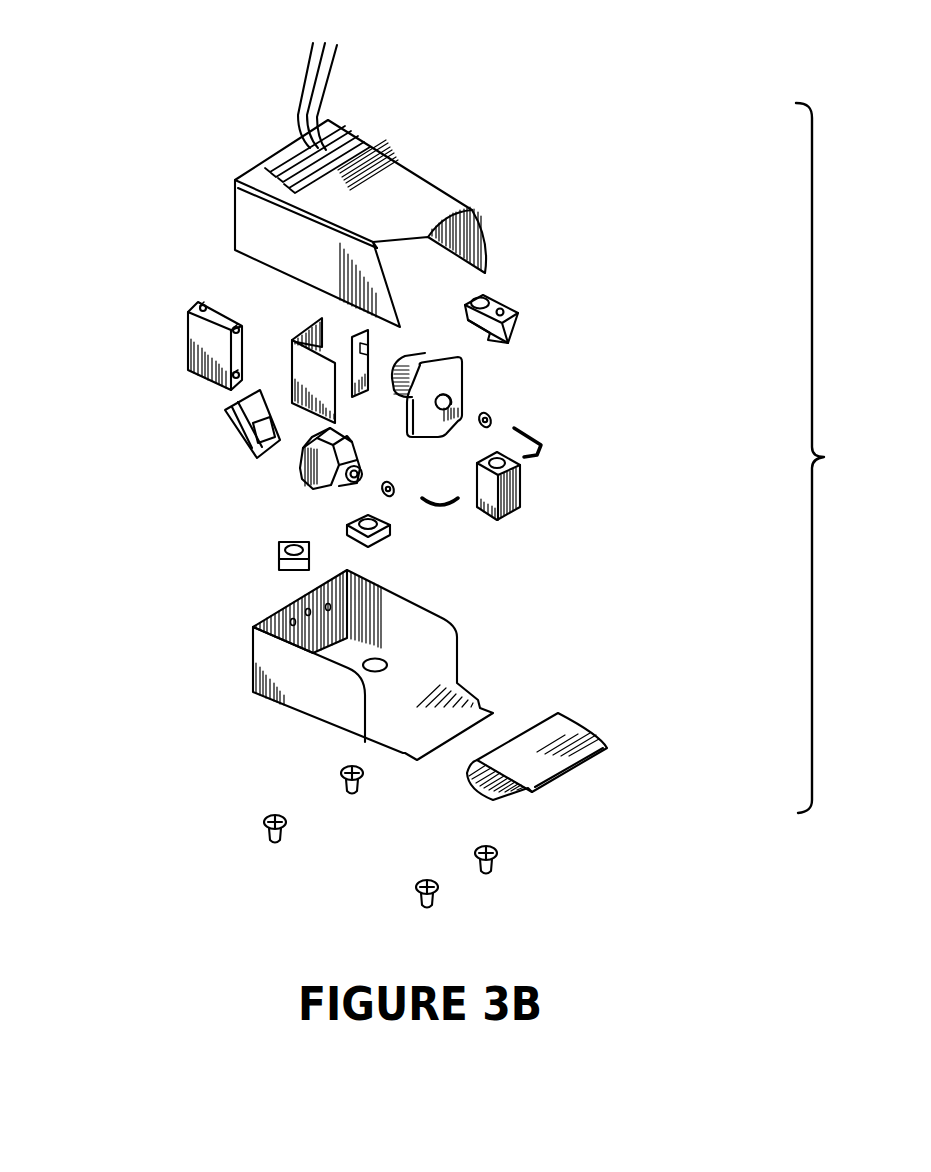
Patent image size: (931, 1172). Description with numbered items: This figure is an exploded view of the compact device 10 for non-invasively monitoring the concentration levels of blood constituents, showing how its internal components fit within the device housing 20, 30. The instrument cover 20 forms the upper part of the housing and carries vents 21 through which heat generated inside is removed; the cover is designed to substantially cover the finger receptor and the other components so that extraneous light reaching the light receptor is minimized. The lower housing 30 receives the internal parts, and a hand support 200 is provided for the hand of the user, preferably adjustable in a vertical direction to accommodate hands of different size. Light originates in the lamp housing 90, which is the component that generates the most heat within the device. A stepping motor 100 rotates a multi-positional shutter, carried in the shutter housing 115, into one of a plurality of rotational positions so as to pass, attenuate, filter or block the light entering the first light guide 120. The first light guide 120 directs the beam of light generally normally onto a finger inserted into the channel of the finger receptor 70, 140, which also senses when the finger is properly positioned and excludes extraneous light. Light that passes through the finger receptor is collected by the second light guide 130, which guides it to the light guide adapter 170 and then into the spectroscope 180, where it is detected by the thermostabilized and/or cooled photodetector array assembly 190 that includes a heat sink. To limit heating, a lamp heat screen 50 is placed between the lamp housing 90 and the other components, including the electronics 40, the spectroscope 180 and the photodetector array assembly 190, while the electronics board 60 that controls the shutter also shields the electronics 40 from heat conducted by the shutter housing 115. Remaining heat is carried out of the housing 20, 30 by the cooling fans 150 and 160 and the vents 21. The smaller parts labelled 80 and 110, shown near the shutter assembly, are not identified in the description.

The device 10 is at (836, 458).
The instrument cover 20 is at (275, 155).
The vents 21 is at (335, 77).
The device housing 30 is at (253, 668).
The electronics 40 is at (187, 350).
The lamp heat screen 50 is at (296, 340).
The electronics board 60 is at (381, 333).
The finger receptor 70 is at (500, 300).
The mounting plate 80 is at (462, 378).
The lamp housing 90 is at (413, 352).
The stepping motor 100 is at (440, 430).
The washer 110 is at (491, 418).
The multi-positional shutter housing 115 is at (460, 362).
The first light guide 120 is at (524, 457).
The second light guide 130 is at (452, 505).
The finger receptor 140 is at (520, 490).
The cooling fan 150 is at (382, 542).
The cooling fan 160 is at (279, 555).
The light guide adapter 170 is at (382, 493).
The spectroscope 180 is at (300, 468).
The photodetector array assembly 190 is at (232, 425).
The hand support 200 is at (567, 757).